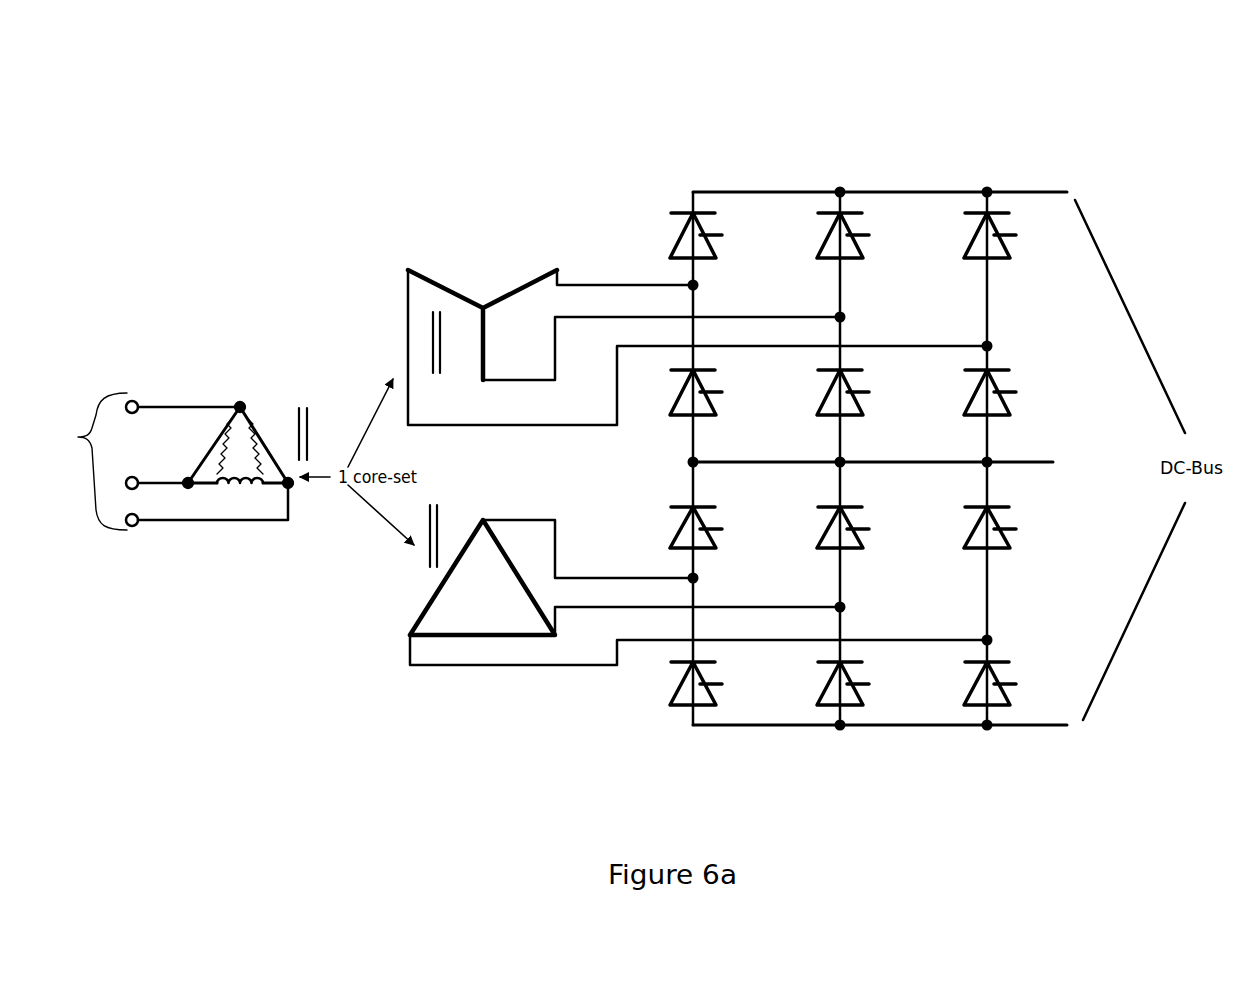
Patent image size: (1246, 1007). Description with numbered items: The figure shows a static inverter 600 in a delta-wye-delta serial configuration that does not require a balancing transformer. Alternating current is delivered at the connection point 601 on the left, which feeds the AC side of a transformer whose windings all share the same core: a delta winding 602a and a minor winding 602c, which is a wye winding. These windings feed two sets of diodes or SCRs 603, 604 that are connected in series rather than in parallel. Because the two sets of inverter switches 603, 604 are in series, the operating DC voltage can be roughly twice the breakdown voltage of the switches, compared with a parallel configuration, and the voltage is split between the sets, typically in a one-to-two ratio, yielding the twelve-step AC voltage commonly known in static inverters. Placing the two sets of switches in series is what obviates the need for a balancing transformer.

The static inverter 600 is at (1095, 105).
The connection point 601 is at (78, 437).
The delta winding 602a is at (264, 484).
The minor winding 602c is at (443, 282).
The set of diodes or SCRs 603 is at (1032, 200).
The set of diodes or SCRs 604 is at (1037, 712).